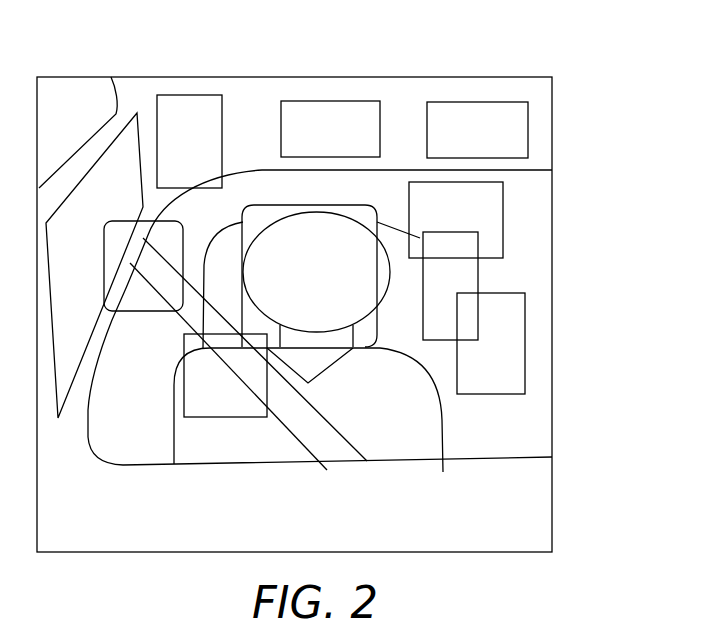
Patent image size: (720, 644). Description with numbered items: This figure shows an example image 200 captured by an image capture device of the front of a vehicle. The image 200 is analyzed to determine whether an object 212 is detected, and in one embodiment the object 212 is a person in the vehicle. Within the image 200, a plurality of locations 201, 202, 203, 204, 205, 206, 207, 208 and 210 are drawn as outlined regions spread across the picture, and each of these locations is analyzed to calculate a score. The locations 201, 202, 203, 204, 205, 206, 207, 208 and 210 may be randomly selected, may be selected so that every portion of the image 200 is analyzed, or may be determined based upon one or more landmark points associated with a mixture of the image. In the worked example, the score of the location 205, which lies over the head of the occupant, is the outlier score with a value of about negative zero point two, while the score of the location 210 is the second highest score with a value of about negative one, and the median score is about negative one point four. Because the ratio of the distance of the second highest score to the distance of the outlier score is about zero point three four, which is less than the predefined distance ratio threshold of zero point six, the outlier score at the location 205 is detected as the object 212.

The image 200 is at (437, 69).
The location 201 is at (193, 113).
The location 202 is at (330, 101).
The location 203 is at (515, 120).
The location 204 is at (168, 231).
The location 205 is at (310, 223).
The location 206 is at (497, 203).
The location 207 is at (467, 275).
The location 208 is at (513, 327).
The location 210 is at (194, 378).
The object 212 is at (443, 428).